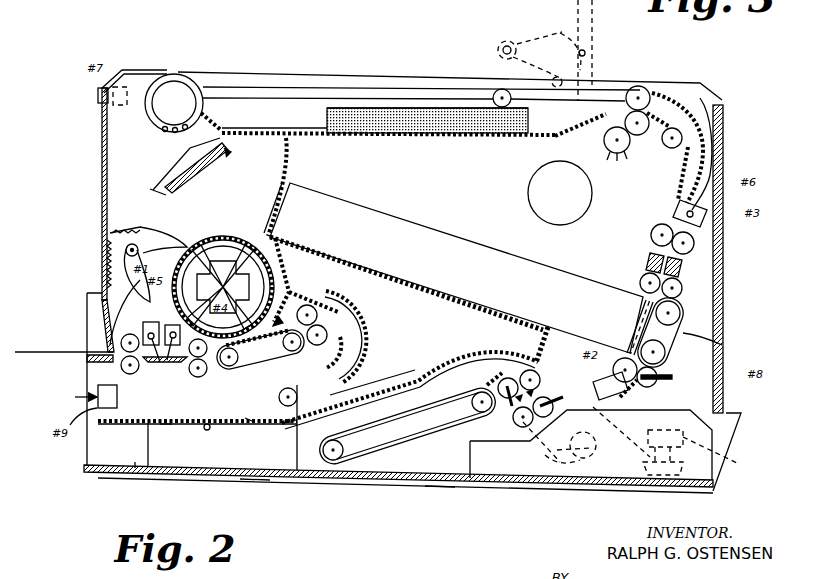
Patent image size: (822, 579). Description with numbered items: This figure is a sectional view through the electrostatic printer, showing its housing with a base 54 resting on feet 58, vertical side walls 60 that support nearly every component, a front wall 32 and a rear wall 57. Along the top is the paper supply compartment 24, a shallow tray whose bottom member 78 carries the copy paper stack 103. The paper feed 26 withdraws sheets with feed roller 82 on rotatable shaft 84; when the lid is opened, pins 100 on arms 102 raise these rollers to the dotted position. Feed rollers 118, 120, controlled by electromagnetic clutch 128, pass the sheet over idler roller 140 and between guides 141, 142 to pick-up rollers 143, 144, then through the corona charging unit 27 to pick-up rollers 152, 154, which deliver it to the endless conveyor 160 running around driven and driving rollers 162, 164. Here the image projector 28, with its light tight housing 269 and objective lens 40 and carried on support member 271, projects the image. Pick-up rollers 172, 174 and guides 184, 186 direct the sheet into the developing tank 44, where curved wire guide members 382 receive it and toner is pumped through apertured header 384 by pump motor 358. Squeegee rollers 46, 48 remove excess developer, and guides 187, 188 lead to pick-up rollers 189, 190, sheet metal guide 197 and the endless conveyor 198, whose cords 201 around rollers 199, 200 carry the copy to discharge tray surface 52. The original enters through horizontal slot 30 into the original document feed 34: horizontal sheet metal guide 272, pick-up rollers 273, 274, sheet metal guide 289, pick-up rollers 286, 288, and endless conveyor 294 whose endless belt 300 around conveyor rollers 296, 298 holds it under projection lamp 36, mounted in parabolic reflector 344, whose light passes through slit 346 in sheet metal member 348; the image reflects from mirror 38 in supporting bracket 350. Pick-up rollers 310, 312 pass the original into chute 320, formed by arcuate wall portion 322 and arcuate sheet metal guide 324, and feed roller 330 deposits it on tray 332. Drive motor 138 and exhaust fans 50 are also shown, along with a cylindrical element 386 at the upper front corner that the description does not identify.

The paper supply compartment 24 is at (284, 113).
The paper feed 26 is at (682, 78).
The corona charging unit 27 is at (688, 264).
The image projector 28 is at (338, 196).
The horizontal slot 30 is at (120, 341).
The front wall 32 is at (104, 178).
The original document feed 34 is at (291, 282).
The projection lamp 36 is at (110, 240).
The mirror 38 is at (200, 182).
The objective lens 40 is at (278, 180).
The developing tank 44 is at (592, 462).
The squeegee roller 46 is at (545, 440).
The squeegee roller 48 is at (530, 429).
The exhaust fans 50 is at (233, 250).
The discharge tray surface 52 is at (135, 466).
The base 54 is at (437, 488).
The rear wall 57 is at (724, 122).
The feet 58 is at (253, 484).
The side walls 60 is at (118, 140).
The bottom member 78 is at (405, 135).
The feed roller 82 is at (493, 95).
The rotatable shaft 84 is at (505, 40).
The pins 100 is at (549, 57).
The arms 102 is at (562, 50).
The copy paper stack 103 is at (370, 108).
The feed roller 118 is at (640, 87).
The feed roller 120 is at (645, 150).
The electromagnetic clutch 128 is at (610, 158).
The drive motor 138 is at (527, 193).
The idler roller 140 is at (683, 140).
The guide 141 is at (668, 195).
The guide 142 is at (700, 100).
The pick-up roller 143 is at (650, 235).
The pick-up roller 144 is at (695, 243).
The pick-up roller 152 is at (641, 280).
The pick-up roller 154 is at (683, 288).
The endless conveyor 160 is at (722, 345).
The driven roller 162 is at (680, 318).
The driving roller 164 is at (666, 352).
The pick-up roller 172 is at (618, 360).
The pick-up roller 174 is at (660, 383).
The guide 184 is at (548, 402).
The guide 186 is at (632, 395).
The guide 187 is at (512, 420).
The guide 188 is at (540, 385).
The pick-up roller 189 is at (487, 362).
The pick-up roller 190 is at (538, 360).
The sheet metal guide 197 is at (497, 385).
The endless conveyor 198 is at (415, 417).
The roller 199 is at (472, 401).
The roller 200 is at (335, 455).
The cords 201 is at (370, 404).
The light tight housing 269 is at (410, 228).
The support member 271 is at (358, 266).
The horizontal sheet metal guide 272 is at (80, 352).
The pick-up roller 273 is at (152, 300).
The pick-up roller 274 is at (120, 366).
The pick-up roller 286 is at (189, 354).
The pick-up roller 288 is at (191, 373).
The sheet metal guide 289 is at (115, 405).
The endless conveyor 294 is at (197, 436).
The conveyor roller 296 is at (229, 368).
The conveyor roller 298 is at (296, 352).
The endless belt 300 is at (208, 424).
The pick-up roller 310 is at (318, 313).
The pick-up roller 312 is at (328, 335).
The chute 320 is at (362, 333).
The arcuate wall portion 322 is at (369, 354).
The arcuate sheet metal guide 324 is at (197, 437).
The feed roller 330 is at (246, 418).
The tray 332 is at (166, 427).
The parabolic reflector 344 is at (152, 190).
The slit 346 is at (288, 393).
The sheet metal member 348 is at (304, 302).
The supporting bracket 350 is at (166, 176).
The pump motor 358 is at (737, 463).
The curved wire guide members 382 is at (640, 445).
The apertured header 384 is at (560, 463).
The cylinder 386 is at (186, 80).